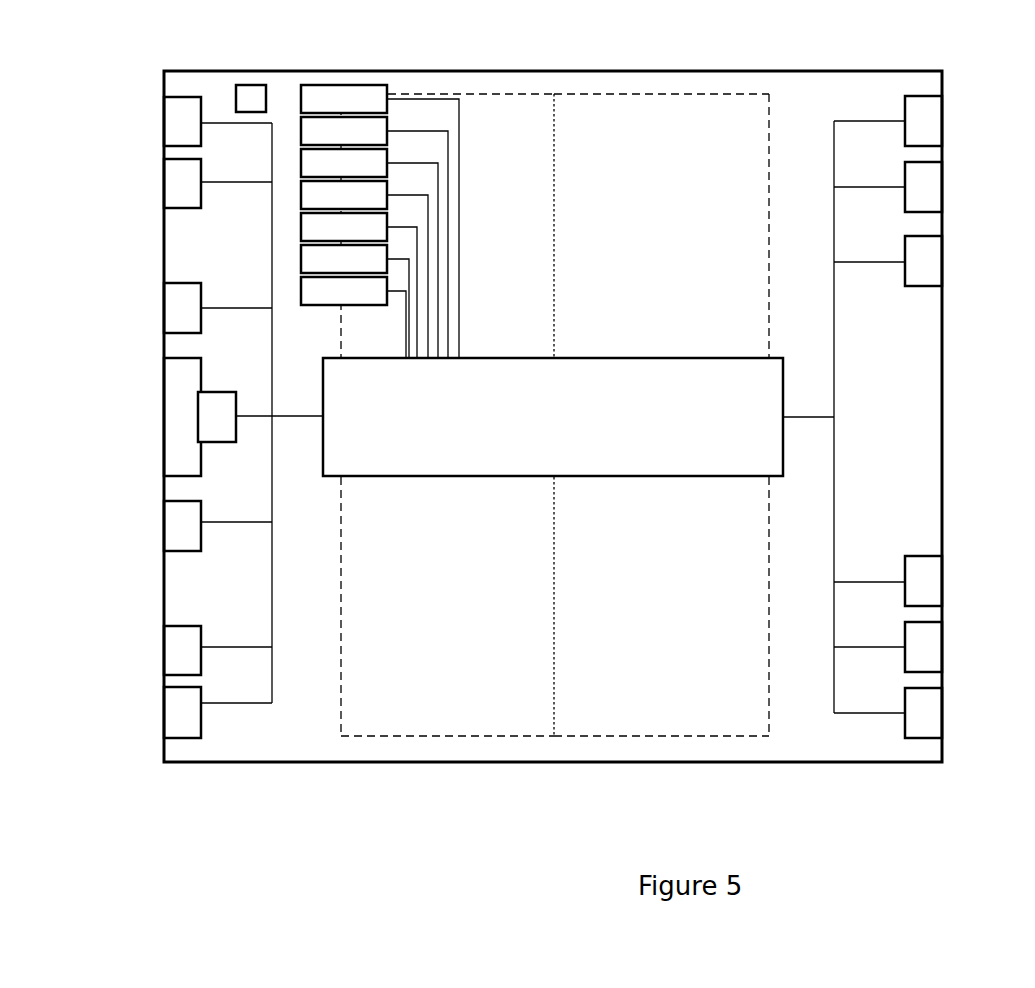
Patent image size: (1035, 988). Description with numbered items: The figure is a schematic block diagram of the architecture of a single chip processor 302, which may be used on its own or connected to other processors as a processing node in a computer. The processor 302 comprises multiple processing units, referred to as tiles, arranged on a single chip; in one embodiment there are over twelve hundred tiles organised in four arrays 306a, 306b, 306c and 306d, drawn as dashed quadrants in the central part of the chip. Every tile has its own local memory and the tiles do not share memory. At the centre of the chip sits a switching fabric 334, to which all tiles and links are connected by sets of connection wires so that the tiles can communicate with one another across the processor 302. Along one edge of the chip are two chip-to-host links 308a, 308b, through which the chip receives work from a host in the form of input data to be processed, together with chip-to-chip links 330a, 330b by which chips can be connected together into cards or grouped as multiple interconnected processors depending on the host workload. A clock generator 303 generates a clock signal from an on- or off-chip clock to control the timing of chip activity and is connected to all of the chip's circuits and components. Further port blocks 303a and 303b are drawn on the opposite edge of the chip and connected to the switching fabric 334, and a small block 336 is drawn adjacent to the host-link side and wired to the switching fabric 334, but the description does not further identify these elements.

The single chip processor 302 is at (577, 58).
The clock generator 303 is at (253, 85).
The uplink ports 303a is at (943, 130).
The downlink ports 303b is at (943, 594).
The chip-to-chip link 330a is at (163, 128).
The chip-to-chip link 330b is at (163, 660).
The chip-to-host link 308a is at (163, 323).
The chip-to-host link 308b is at (163, 535).
The controller 336 is at (212, 392).
The switching fabric 334 is at (578, 417).
The array of tiles 306a is at (695, 113).
The array of tiles 306b is at (667, 723).
The array of tiles 306c is at (392, 705).
The array of tiles 306d is at (507, 160).